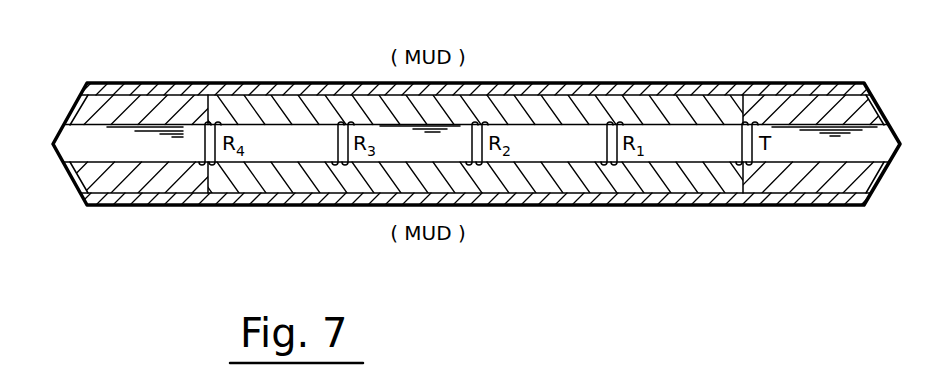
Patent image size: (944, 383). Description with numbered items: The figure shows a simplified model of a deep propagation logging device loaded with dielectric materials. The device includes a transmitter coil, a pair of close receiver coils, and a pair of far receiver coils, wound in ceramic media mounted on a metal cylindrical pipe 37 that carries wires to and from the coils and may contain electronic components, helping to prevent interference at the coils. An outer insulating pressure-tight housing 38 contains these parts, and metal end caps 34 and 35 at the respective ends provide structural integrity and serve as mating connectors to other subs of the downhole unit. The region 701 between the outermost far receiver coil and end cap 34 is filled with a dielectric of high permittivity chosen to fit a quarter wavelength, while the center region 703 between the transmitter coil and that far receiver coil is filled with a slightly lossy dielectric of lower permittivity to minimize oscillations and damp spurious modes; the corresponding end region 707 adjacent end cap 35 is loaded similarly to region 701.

The metal end cap 34 is at (75, 103).
The metal end cap 35 is at (877, 108).
The metal cylindrical pipe 37 is at (93, 128).
The outer insulating pressure-tight housing 38 is at (173, 83).
The region between R4 and end cap 701 is at (145, 188).
The region between T and R4 703 is at (577, 185).
The end housing section 707 is at (833, 188).